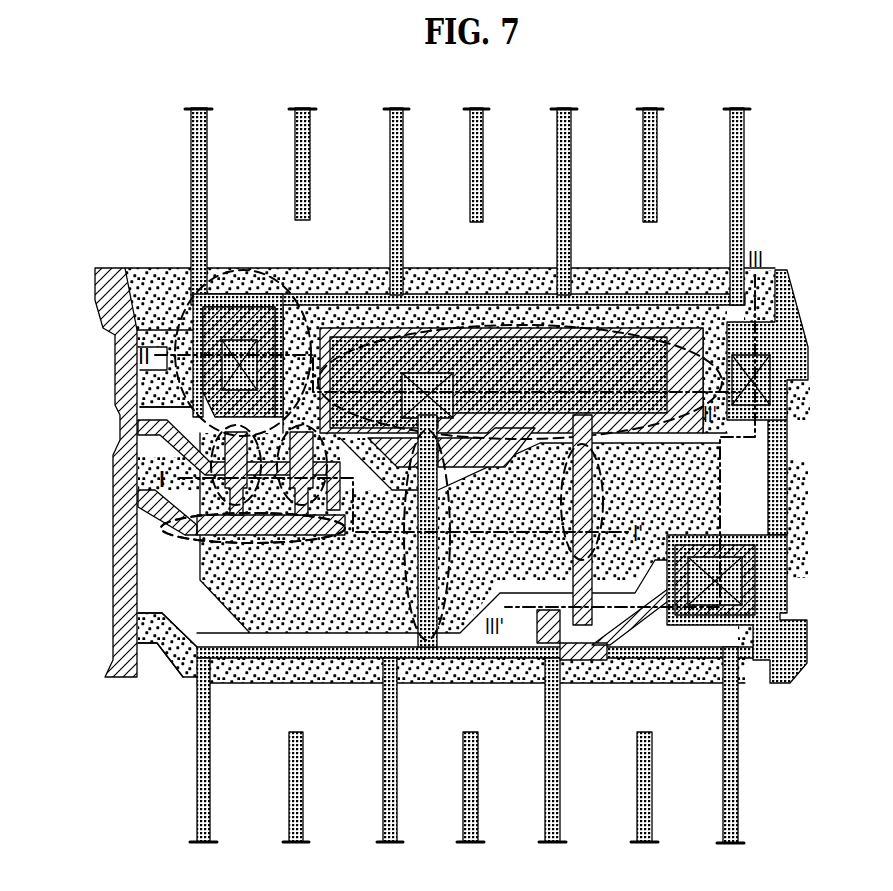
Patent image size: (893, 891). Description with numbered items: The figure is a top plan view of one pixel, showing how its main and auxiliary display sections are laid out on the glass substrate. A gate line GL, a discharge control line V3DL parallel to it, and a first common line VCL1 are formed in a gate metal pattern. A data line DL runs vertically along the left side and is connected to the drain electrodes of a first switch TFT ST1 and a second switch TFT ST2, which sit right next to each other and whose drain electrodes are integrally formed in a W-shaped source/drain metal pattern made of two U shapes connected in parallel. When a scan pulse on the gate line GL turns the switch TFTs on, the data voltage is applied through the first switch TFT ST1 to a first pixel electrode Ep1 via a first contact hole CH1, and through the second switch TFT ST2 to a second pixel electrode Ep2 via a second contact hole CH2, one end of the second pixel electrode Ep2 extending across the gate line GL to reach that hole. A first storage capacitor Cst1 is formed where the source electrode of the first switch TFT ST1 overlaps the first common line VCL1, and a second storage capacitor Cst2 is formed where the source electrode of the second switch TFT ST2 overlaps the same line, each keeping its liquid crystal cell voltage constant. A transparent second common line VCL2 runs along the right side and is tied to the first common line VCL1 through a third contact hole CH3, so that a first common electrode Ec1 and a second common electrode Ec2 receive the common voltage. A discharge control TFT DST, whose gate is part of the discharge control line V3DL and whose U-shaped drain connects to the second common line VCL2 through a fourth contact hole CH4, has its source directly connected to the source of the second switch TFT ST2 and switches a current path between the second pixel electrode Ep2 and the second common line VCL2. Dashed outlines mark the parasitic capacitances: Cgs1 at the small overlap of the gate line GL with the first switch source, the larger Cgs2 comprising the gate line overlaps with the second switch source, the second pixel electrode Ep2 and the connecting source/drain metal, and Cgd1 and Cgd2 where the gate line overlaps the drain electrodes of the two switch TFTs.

The data line DL is at (118, 548).
The gate line GL is at (150, 474).
The first switch TFT ST1 is at (217, 550).
The second switch TFT ST2 is at (307, 550).
The discharge control line V3DL is at (146, 628).
The first common line VCL1 is at (153, 382).
The second common line VCL2 is at (793, 325).
The first storage capacitor Cst1 is at (279, 274).
The second storage capacitor Cst2 is at (480, 290).
The first pixel electrode Ep1 is at (745, 188).
The second pixel electrode Ep2 is at (740, 740).
The first common electrode Ec1 is at (657, 135).
The second common electrode Ec2 is at (652, 822).
The first contact hole CH1 is at (243, 340).
The second contact hole CH2 is at (432, 372).
The third contact hole CH3 is at (808, 383).
The fourth contact hole CH4 is at (747, 588).
The gate-source parasitic capacitance of the first switch TFT Cgs1 is at (237, 513).
The gate-source parasitic capacitance of the second switch TFT Cgs2 is at (558, 505).
The gate-drain parasitic capacitance of the first switch TFT Cgd1 is at (270, 550).
The gate-drain parasitic capacitance of the second switch TFT Cgd2 is at (253, 647).
The discharge control TFT DST is at (583, 665).